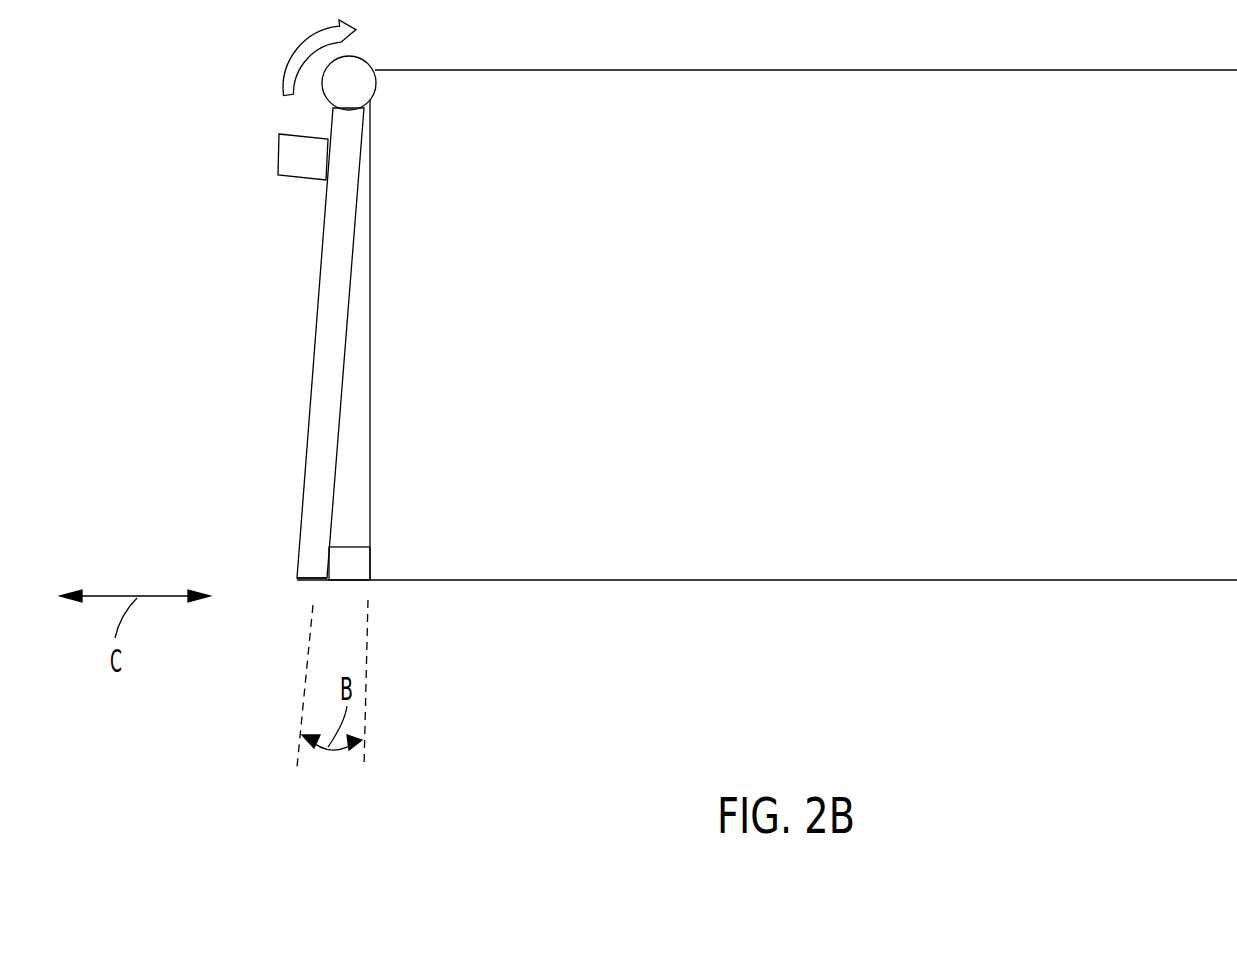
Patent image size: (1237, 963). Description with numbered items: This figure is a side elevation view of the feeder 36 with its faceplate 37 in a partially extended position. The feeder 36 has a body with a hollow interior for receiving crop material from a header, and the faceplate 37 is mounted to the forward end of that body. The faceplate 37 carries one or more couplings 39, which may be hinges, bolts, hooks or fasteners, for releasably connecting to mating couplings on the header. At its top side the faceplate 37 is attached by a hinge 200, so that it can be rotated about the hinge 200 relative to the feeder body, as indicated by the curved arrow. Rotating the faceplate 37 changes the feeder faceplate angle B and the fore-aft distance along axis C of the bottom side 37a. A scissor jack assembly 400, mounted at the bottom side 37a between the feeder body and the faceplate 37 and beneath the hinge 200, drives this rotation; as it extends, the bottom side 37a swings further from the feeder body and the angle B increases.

The hinge 200 is at (372, 84).
The faceplate 37 is at (313, 400).
The coupling 39 is at (278, 152).
The scissor jack assembly 400 is at (367, 558).
The feeder 36 is at (885, 572).
The bottom side of faceplate 37a is at (306, 583).